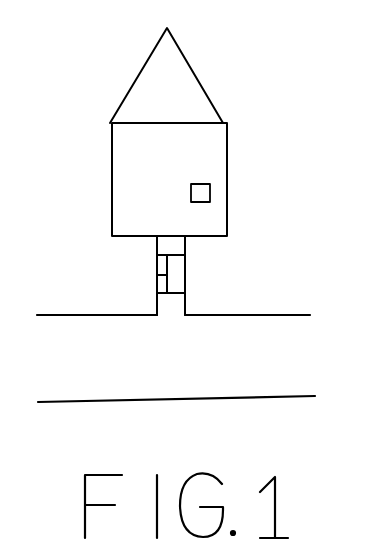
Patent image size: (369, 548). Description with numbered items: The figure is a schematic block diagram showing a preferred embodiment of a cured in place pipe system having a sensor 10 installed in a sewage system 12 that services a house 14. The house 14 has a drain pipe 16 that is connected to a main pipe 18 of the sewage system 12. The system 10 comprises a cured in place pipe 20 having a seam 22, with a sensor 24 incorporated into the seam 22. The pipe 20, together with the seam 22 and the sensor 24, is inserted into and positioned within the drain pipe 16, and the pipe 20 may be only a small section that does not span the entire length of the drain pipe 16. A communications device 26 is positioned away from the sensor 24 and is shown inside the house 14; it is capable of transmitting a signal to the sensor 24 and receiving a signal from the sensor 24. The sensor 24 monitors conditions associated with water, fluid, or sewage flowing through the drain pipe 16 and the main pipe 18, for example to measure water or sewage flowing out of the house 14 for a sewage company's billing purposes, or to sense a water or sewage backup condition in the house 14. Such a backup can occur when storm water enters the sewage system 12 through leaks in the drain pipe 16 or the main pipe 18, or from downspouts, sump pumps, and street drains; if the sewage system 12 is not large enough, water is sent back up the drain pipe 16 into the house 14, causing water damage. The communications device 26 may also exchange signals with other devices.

The cured in place pipe system having a sensor 10 is at (250, 182).
The sewage system 12 is at (88, 289).
The house 14 is at (148, 97).
The drain pipe 16 is at (177, 248).
The main pipe 18 is at (72, 383).
The cured in place pipe 20 is at (185, 278).
The seam 22 is at (157, 288).
The sensor 24 is at (157, 263).
The communications device 26 is at (206, 198).